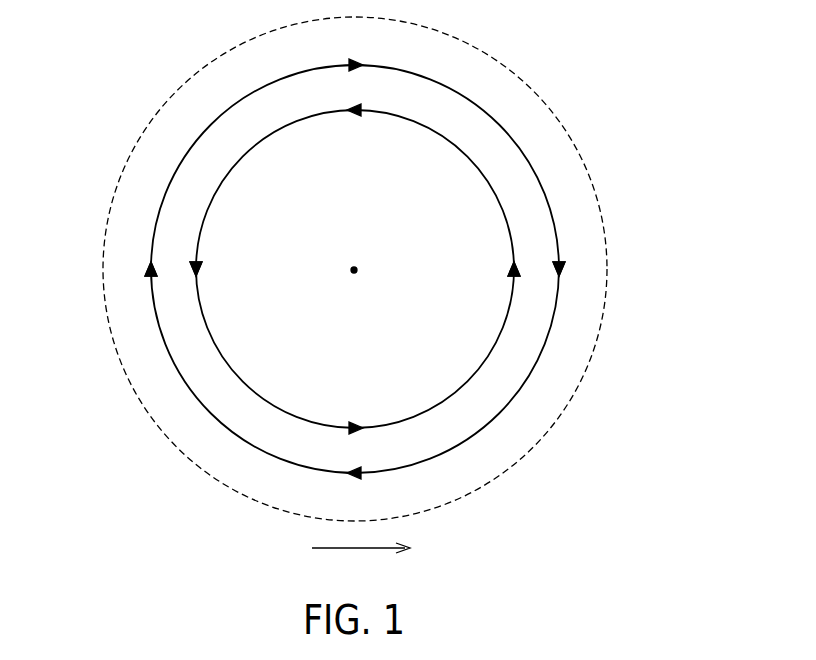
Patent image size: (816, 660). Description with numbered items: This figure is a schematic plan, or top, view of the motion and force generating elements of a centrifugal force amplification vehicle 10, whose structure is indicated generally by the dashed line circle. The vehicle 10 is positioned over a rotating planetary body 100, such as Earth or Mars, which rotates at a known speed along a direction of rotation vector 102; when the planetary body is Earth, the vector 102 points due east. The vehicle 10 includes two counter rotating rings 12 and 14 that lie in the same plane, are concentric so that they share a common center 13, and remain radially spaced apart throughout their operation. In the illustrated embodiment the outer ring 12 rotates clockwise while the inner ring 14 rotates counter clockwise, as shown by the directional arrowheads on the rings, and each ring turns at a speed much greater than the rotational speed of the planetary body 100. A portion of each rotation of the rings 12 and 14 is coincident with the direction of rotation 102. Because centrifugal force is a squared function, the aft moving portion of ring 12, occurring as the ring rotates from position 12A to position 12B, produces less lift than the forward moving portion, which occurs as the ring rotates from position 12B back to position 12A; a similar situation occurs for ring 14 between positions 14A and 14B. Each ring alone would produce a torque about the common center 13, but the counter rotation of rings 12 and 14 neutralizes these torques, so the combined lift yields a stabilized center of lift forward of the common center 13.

The vehicle 10 is at (530, 452).
The ring 12 is at (176, 164).
The position of ring 12 12A is at (563, 269).
The position of ring 12 12B is at (146, 268).
The common center 13 is at (354, 270).
The ring 14 is at (200, 228).
The position of ring 14 14A is at (510, 271).
The position of ring 14 14B is at (200, 270).
The rotating planetary body 100 is at (163, 508).
The direction of rotation vector 102 is at (345, 551).